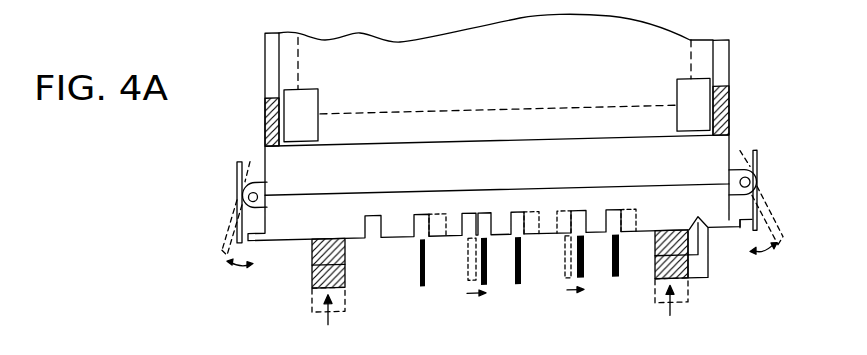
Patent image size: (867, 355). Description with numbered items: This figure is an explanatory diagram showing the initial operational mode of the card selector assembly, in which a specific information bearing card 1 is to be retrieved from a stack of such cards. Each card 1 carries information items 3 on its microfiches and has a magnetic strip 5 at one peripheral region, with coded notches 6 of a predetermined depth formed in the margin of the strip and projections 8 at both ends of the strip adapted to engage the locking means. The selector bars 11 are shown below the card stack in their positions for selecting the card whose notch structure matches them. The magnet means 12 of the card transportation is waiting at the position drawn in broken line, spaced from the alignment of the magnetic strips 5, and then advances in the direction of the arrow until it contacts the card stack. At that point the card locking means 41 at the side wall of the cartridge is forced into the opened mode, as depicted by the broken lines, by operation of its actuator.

The information bearing card 1 is at (652, 38).
The information items 3 is at (693, 91).
The magnetic strip 5 is at (288, 223).
The coded notches 6 is at (423, 221).
The projections 8 is at (230, 257).
The selector bars 11 is at (428, 292).
The magnet means 12 is at (313, 277).
The card locking means 41 is at (236, 178).